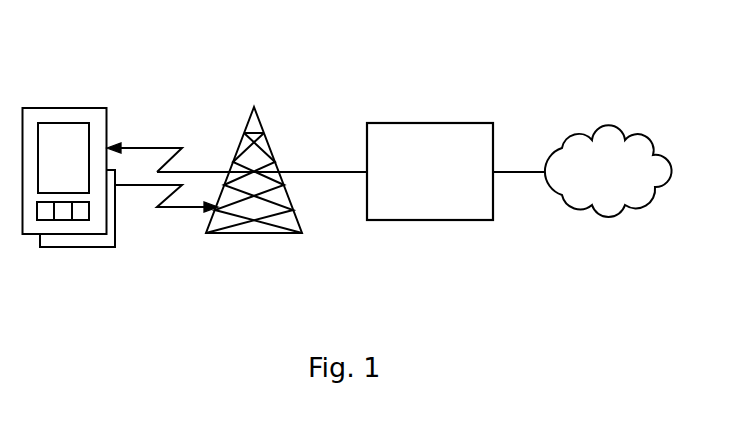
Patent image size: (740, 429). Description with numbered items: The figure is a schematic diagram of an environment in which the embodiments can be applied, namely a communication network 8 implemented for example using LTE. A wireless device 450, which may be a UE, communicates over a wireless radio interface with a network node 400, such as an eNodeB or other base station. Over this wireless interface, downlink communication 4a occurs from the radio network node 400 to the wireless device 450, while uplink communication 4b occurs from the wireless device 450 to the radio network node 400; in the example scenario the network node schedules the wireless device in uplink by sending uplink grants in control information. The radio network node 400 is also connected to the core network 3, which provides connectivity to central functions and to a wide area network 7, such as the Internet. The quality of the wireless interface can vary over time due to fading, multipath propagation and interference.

The wireless device 450 is at (72, 107).
The downlink communication 4a is at (153, 147).
The uplink communication 4b is at (135, 187).
The network node 400 is at (272, 135).
The core network 3 is at (421, 168).
The wide area network 7 is at (600, 184).
The communication network 8 is at (630, 96).